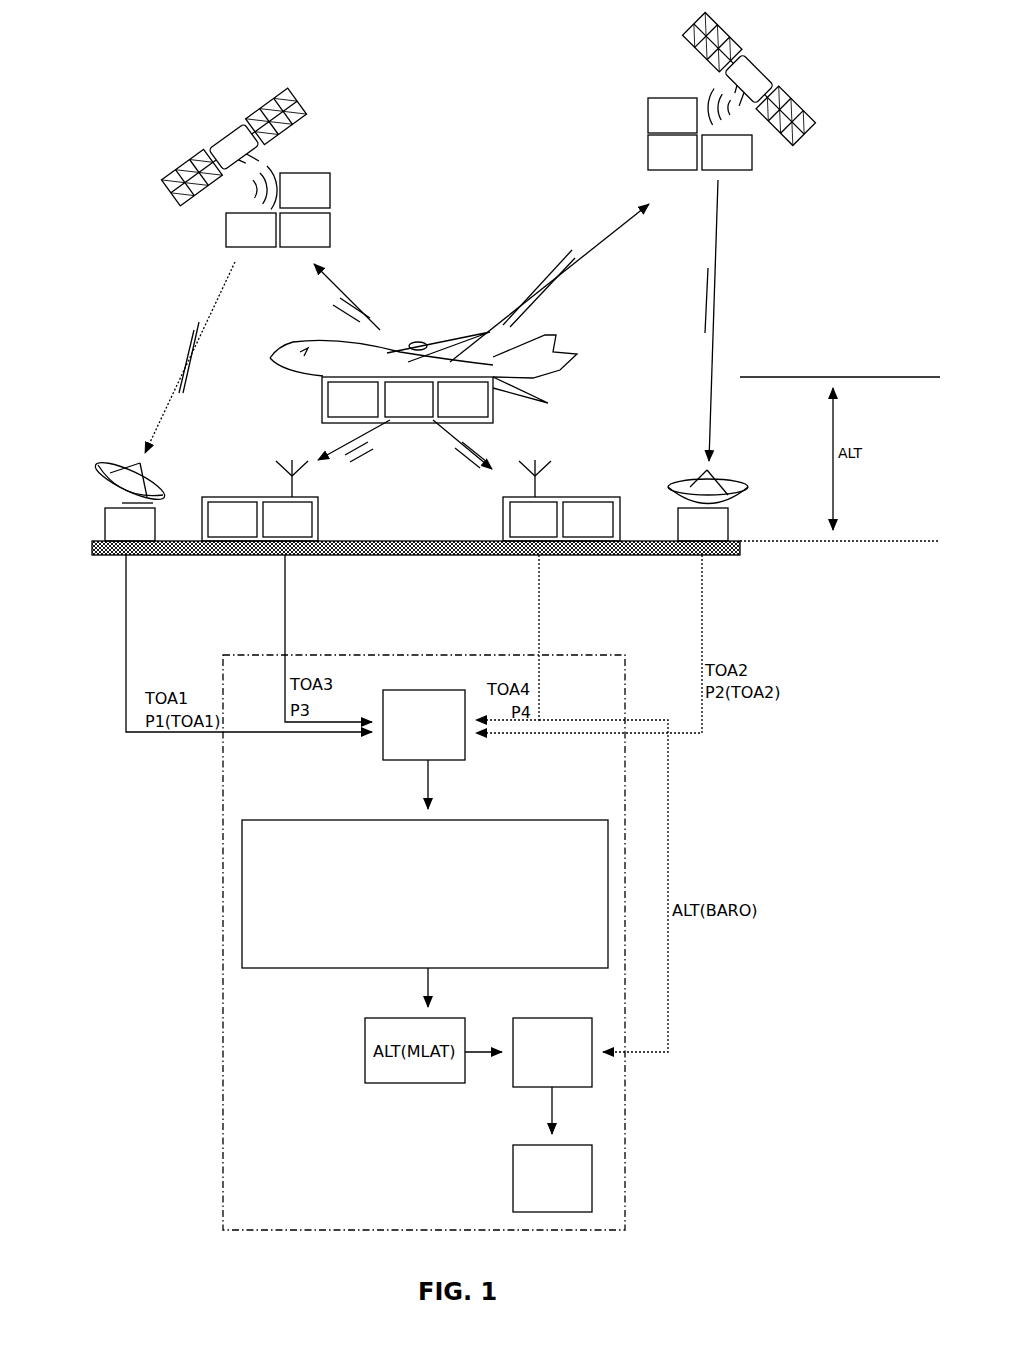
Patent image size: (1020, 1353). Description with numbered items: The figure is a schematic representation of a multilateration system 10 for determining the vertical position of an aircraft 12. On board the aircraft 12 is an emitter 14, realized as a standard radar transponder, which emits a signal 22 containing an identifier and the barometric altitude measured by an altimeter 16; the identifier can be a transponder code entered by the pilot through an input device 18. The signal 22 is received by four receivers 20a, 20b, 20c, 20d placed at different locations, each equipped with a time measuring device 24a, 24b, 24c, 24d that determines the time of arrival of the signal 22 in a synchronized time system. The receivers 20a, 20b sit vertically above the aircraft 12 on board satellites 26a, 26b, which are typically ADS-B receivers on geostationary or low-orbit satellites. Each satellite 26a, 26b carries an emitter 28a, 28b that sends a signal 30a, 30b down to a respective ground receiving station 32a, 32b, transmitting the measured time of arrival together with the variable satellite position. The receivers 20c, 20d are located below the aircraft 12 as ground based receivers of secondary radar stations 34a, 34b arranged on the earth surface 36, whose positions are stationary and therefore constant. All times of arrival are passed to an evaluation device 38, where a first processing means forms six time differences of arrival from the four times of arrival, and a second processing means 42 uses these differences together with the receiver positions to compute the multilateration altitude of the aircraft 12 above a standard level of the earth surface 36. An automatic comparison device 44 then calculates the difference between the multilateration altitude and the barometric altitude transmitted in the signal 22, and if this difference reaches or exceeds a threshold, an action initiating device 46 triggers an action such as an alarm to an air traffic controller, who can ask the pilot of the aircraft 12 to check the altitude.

The multilateration system 10 is at (118, 62).
The aircraft 12 is at (548, 353).
The emitter 14 is at (413, 407).
The altimeter 16 is at (357, 395).
The input device 18 is at (462, 395).
The receiver 20a is at (318, 229).
The receiver 20b is at (658, 153).
The receiver 20c is at (307, 518).
The receiver 20d is at (518, 522).
The signal 22 is at (548, 265).
The time measuring device 24a is at (325, 188).
The time measuring device 24b is at (670, 100).
The time measuring device 24c is at (220, 510).
The time measuring device 24d is at (602, 510).
The satellite 26a is at (222, 132).
The satellite 26b is at (764, 68).
The emitter 28a is at (237, 227).
The emitter 28b is at (745, 158).
The signal 30a is at (176, 378).
The signal 30b is at (719, 268).
The ground receiving station 32a is at (110, 520).
The ground receiving station 32b is at (722, 528).
The secondary radar station 34a is at (240, 497).
The secondary radar station 34b is at (573, 497).
The earth surface 36 is at (643, 537).
The evaluation device 38 is at (625, 777).
The second processing means 42 is at (242, 893).
The comparison device 44 is at (520, 1070).
The action initiating device 46 is at (580, 1165).